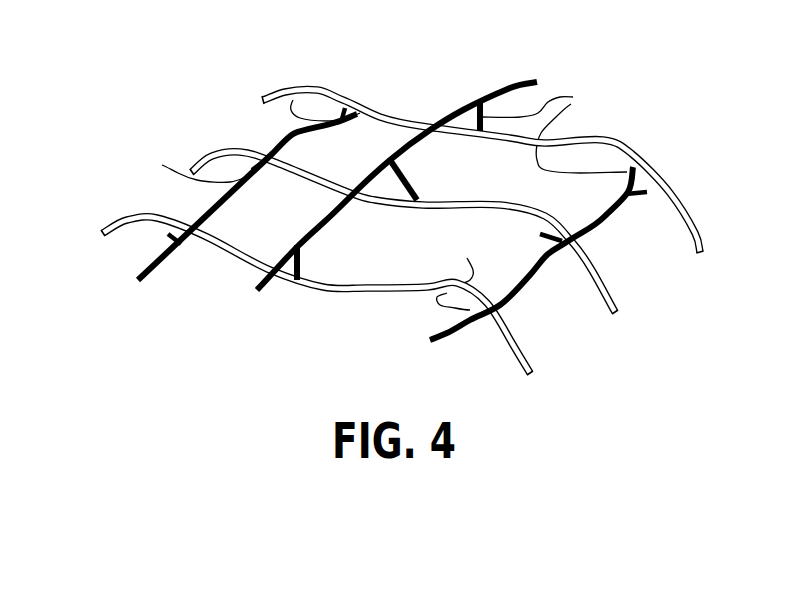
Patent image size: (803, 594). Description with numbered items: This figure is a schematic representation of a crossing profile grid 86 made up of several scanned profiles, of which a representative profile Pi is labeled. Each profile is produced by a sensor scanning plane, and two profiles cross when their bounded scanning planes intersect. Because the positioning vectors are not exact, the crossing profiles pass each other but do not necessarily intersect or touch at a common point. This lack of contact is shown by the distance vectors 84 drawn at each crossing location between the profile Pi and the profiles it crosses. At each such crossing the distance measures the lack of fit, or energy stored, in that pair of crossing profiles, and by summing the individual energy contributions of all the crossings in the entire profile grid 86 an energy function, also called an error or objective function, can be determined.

The distance vectors 84 is at (306, 87).
The crossing profile grid 86 is at (411, 243).
The profile Pi is at (317, 320).